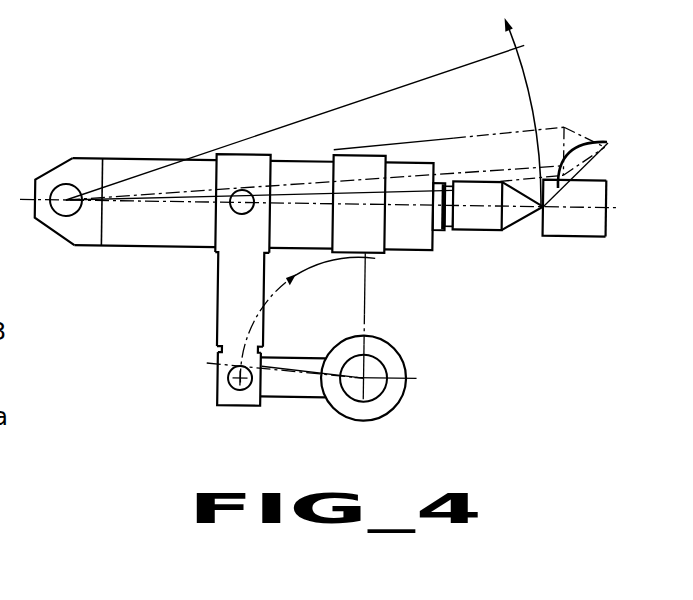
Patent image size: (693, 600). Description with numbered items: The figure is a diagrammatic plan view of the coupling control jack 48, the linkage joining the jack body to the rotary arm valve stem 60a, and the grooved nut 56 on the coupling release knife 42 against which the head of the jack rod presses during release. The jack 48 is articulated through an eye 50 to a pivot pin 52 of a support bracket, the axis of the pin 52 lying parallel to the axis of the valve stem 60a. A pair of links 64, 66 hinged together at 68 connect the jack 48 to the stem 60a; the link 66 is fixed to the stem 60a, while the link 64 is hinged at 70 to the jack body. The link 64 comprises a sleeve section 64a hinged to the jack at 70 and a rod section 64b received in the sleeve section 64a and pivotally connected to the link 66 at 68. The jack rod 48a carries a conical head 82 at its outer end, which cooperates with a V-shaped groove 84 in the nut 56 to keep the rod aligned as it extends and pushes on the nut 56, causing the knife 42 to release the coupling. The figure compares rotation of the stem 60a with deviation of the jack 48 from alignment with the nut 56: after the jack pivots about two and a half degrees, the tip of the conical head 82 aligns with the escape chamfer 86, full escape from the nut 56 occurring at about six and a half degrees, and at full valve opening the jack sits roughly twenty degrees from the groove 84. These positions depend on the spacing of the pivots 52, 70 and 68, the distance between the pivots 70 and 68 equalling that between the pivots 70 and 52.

The knife element 42 is at (576, 248).
The hydraulic control jack 48 is at (141, 160).
The jack rod 48a is at (439, 233).
The eye 50 is at (62, 217).
The pivot pin 52 is at (66, 189).
The grooved nut 56 is at (616, 174).
The arm valve stem 60a is at (417, 377).
The link 64 is at (214, 332).
The sleeve section 64a is at (217, 304).
The rod section 64b is at (216, 350).
The link 66 is at (303, 397).
The hinge 68 is at (221, 392).
The hinge 70 is at (231, 211).
The conical head 82 is at (482, 232).
The V-shaped groove 84 is at (520, 224).
The escape chamfer 86 is at (593, 163).